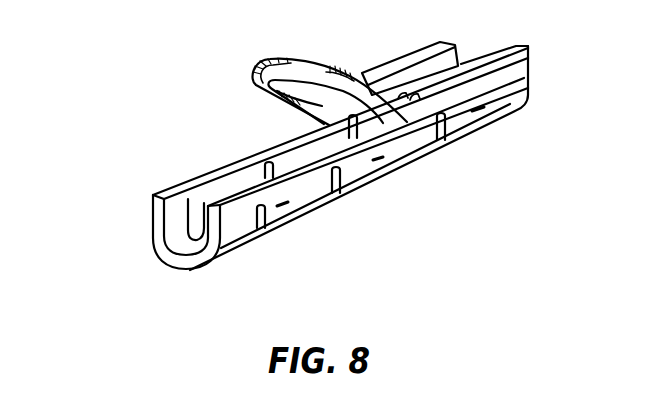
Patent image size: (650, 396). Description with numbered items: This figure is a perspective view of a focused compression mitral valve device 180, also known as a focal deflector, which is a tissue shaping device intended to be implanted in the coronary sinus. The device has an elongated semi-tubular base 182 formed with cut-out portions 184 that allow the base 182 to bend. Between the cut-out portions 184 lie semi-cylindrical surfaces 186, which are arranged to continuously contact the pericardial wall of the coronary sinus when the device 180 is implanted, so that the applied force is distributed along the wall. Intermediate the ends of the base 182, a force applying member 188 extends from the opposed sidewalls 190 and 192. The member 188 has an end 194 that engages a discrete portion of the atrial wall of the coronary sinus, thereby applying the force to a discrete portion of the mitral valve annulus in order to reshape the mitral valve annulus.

The focused compression mitral valve device 180 is at (309, 157).
The elongated semi-tubular base 182 is at (316, 158).
The cut-out portions 184 is at (265, 229).
The semi-cylindrical surfaces 186 is at (235, 263).
The force applying member 188 is at (329, 63).
The sidewall 190 is at (198, 173).
The sidewall 192 is at (293, 167).
The end 194 is at (245, 42).